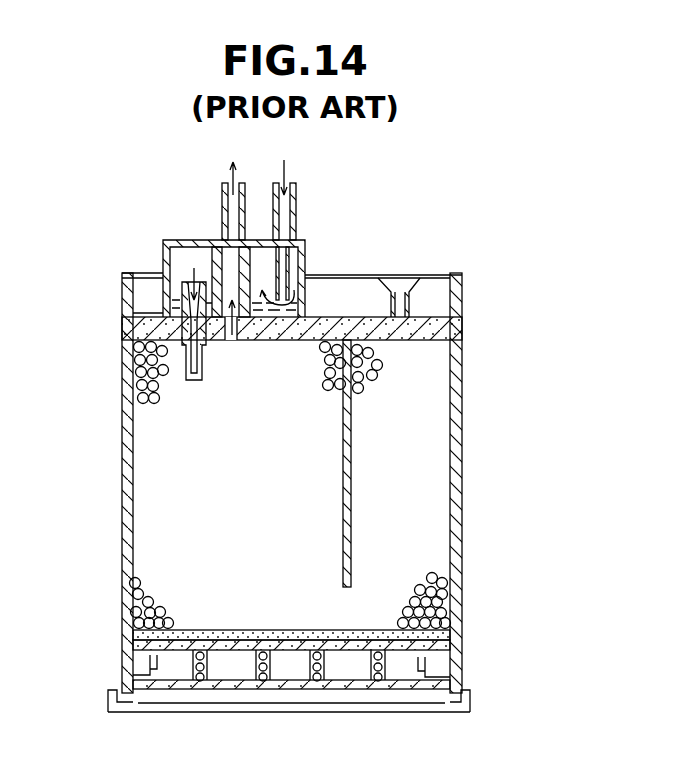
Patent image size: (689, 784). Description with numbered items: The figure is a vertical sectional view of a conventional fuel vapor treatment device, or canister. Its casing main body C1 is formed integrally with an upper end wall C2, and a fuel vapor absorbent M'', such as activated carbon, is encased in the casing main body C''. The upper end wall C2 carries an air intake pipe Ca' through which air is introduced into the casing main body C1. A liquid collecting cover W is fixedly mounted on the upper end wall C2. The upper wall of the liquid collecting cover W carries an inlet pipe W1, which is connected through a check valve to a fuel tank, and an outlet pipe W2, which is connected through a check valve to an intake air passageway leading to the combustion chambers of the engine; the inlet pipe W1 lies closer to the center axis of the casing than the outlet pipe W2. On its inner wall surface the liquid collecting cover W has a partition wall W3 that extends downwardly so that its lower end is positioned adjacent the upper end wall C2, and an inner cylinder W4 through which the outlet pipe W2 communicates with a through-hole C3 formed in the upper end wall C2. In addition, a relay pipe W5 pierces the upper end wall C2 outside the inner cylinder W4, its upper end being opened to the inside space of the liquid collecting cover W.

The liquid collecting cover W is at (163, 257).
The inlet pipe W1 is at (300, 203).
The outlet pipe W2 is at (225, 220).
The partition wall W3 is at (282, 268).
The inner cylinder W4 is at (212, 267).
The relay pipe W5 is at (182, 297).
The casing main body C1 is at (123, 515).
The upper end wall C2 is at (328, 320).
The through-hole C3 is at (233, 340).
The air intake pipe Ca' is at (437, 269).
The casing main body C'' is at (419, 483).
The fuel vapor absorbent M'' is at (249, 485).